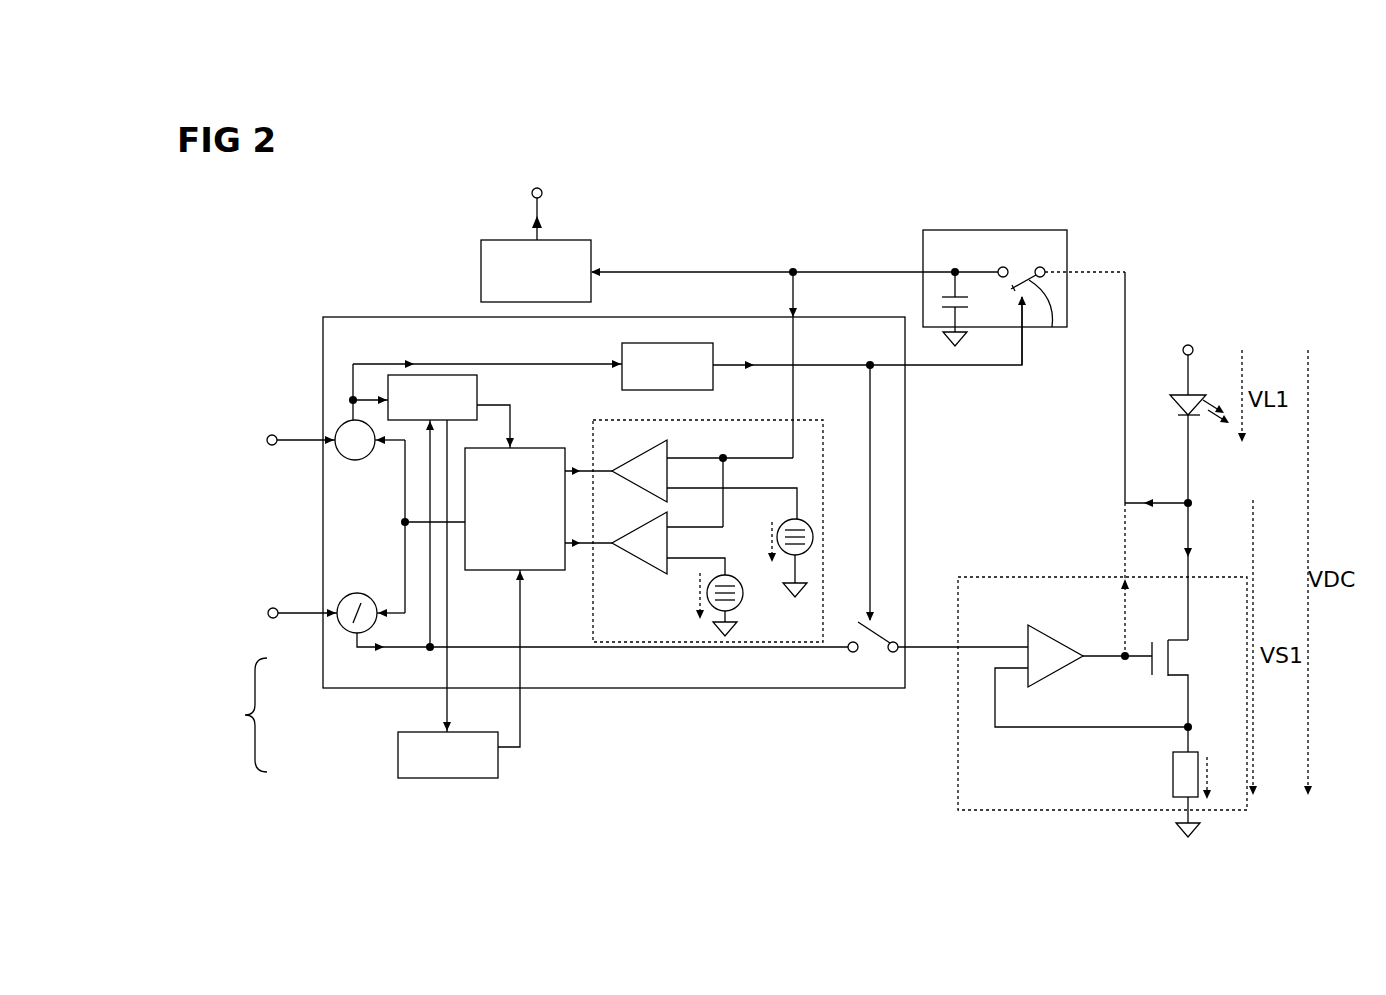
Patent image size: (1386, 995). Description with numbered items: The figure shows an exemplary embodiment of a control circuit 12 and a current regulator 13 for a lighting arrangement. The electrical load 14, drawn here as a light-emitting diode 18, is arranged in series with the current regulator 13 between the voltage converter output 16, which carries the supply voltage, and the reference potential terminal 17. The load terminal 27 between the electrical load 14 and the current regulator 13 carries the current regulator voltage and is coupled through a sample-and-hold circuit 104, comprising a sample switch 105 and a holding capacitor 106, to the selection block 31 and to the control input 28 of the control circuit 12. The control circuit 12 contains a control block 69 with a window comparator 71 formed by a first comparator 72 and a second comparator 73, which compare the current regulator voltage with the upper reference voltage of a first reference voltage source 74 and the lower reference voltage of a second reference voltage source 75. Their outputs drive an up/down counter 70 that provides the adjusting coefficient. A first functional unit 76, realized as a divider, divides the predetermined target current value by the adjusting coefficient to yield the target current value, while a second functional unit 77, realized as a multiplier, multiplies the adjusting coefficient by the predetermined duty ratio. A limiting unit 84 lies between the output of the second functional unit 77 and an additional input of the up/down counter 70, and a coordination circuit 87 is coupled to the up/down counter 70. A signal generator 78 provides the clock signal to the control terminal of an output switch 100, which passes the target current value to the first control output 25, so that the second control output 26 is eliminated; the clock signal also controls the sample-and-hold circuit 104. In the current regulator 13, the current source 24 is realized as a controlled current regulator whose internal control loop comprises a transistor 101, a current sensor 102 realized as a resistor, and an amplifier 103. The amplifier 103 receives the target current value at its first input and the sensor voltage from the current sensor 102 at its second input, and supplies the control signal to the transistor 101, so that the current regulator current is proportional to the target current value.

The control circuit 12 is at (240, 715).
The current regulator 13 is at (1084, 845).
The electrical load 14 is at (1155, 368).
The voltage converter output 16 is at (1192, 345).
The reference potential terminal 17 is at (741, 632).
The first light-emitting diode 18 is at (1176, 407).
The current source 24 is at (1045, 808).
The first control output 25 is at (906, 646).
The second control output 26 is at (905, 368).
The load terminal 27 is at (1194, 503).
The control input 28 is at (791, 320).
The selection block 31 is at (481, 292).
The control block 69 is at (323, 672).
The up/down counter 70 is at (525, 447).
The window comparator 71 is at (615, 420).
The first comparator 72 is at (646, 452).
The second comparator 73 is at (645, 565).
The first reference voltage source 74 is at (785, 521).
The second reference voltage source 75 is at (743, 585).
The first functional unit 76 is at (357, 593).
The second functional unit 77 is at (357, 461).
The signal generator 78 is at (620, 360).
The limiting unit 84 is at (478, 391).
The coordination circuit 87 is at (397, 752).
The output switch 100 is at (866, 655).
The transistor 101 is at (1172, 657).
The current sensor 102 is at (1173, 774).
The amplifier 103 is at (1040, 631).
The sample-and-hold circuit 104 is at (1011, 230).
The sample switch 105 is at (1038, 318).
The holding capacitor 106 is at (950, 268).